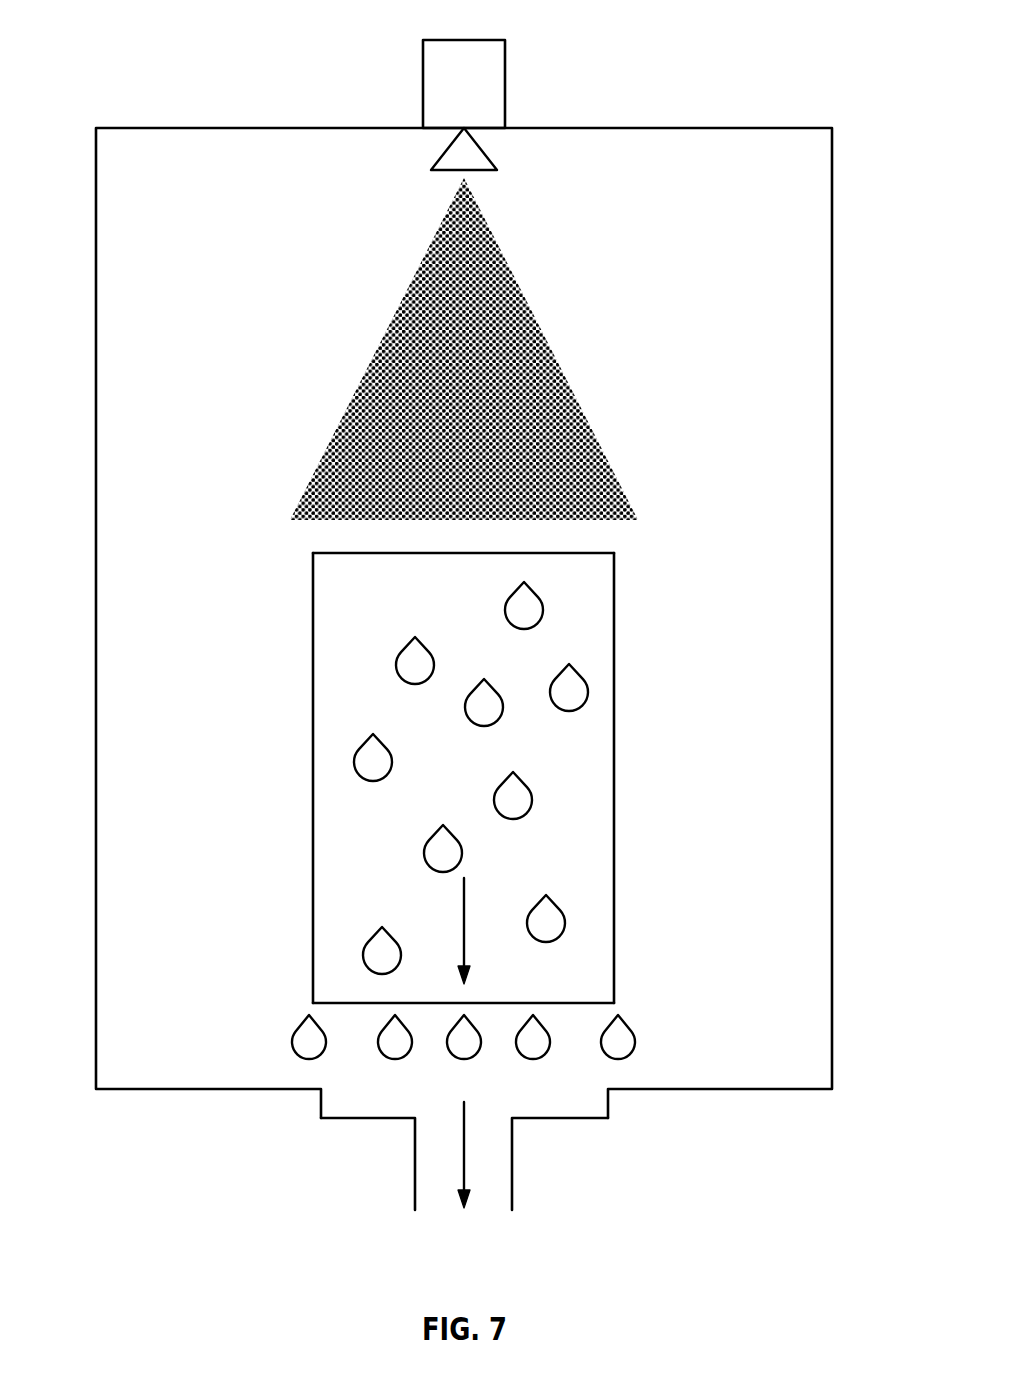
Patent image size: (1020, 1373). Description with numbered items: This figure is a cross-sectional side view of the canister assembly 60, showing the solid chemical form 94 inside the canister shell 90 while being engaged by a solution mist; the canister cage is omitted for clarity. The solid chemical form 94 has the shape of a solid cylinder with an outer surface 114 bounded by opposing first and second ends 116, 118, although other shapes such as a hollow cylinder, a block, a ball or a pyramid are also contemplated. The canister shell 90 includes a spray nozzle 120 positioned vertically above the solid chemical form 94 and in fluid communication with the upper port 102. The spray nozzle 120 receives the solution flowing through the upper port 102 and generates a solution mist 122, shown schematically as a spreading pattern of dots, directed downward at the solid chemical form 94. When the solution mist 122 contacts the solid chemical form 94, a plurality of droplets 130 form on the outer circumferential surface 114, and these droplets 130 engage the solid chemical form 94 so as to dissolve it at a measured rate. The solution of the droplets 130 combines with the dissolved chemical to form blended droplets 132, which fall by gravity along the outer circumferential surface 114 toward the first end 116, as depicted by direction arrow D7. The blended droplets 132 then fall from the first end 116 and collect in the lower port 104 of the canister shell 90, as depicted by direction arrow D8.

The canister assembly 60 is at (822, 36).
The canister shell 90 is at (833, 608).
The solid chemical form 94 is at (615, 590).
The upper port 102 is at (423, 83).
The lower port 104 is at (415, 1193).
The outer surface 114 is at (615, 857).
The first end 116 is at (580, 1003).
The second end 118 is at (600, 553).
The spray nozzle 120 is at (474, 143).
The solution mist 122 is at (553, 343).
The droplets 130 is at (408, 644).
The blended droplets 132 is at (462, 1060).
The direction arrow D7 is at (466, 944).
The direction arrow D8 is at (466, 1162).